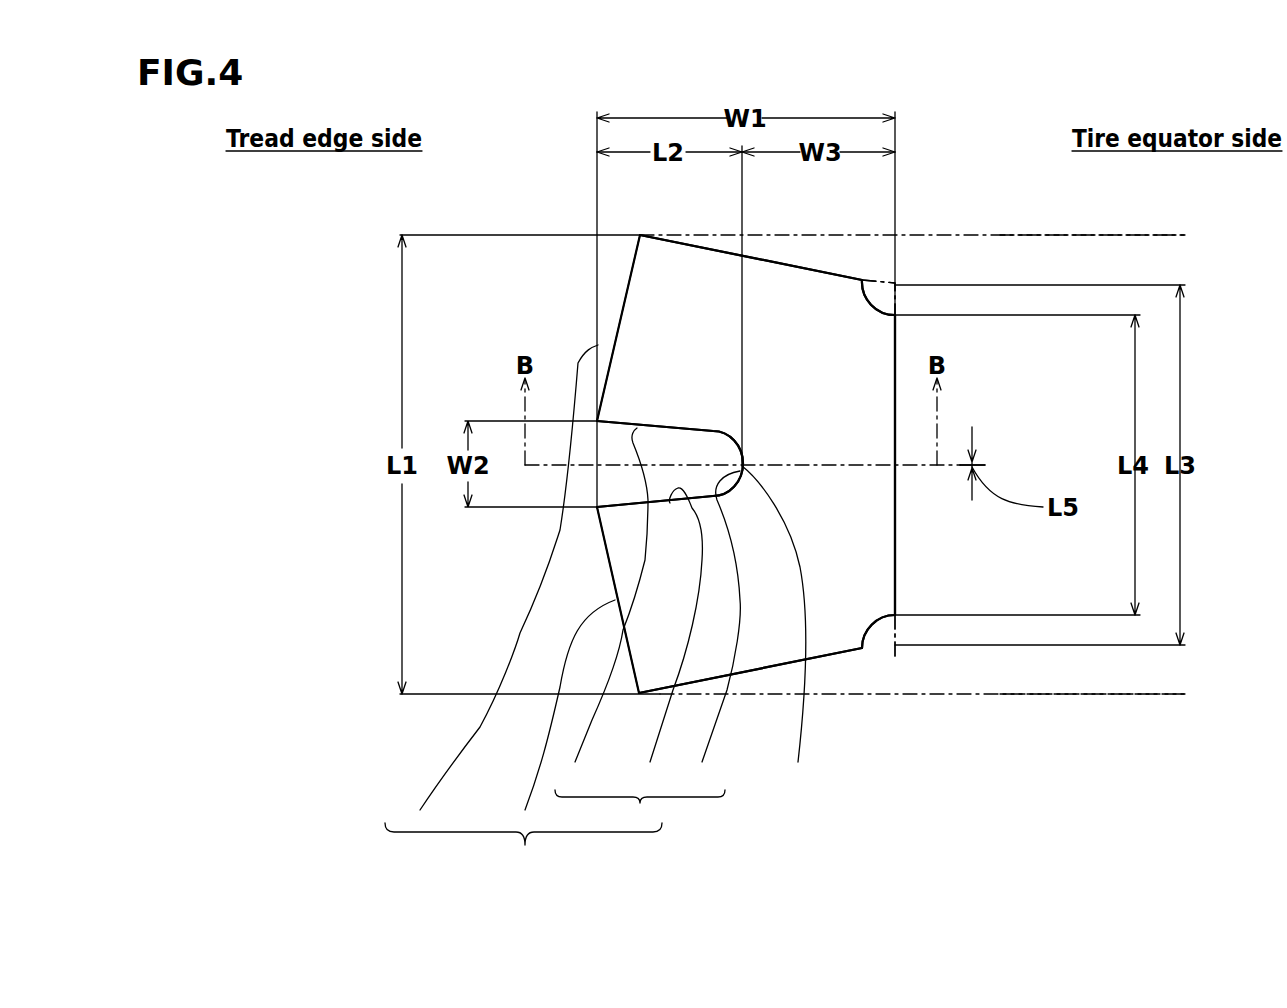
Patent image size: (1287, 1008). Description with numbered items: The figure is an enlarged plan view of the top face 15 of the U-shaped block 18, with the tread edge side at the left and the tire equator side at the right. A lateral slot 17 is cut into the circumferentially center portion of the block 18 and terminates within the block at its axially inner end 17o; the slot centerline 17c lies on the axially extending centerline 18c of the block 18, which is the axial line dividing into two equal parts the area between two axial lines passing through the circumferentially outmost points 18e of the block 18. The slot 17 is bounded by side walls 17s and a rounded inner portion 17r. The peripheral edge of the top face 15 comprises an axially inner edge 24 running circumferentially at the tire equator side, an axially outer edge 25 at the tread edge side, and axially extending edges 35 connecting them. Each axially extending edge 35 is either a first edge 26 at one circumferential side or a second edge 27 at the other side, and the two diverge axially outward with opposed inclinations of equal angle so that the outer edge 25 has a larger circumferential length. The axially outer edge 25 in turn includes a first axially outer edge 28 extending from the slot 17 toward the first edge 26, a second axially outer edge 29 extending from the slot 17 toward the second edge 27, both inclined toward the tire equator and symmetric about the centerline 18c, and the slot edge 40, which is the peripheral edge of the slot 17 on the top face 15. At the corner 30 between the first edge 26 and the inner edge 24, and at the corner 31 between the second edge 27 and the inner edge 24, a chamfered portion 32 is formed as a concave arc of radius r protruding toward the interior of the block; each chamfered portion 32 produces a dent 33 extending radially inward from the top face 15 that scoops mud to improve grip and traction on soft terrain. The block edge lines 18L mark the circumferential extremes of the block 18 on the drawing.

The U-shaped block 18 is at (564, 203).
The circumferentially outmost points 18e is at (640, 235).
The lateral slot 17 is at (679, 435).
The second edge 27 is at (752, 232).
The first edge 26 is at (828, 658).
The axially extending edge 35 is at (780, 262).
The chamfered portion 32 is at (968, 489).
The corner 31 is at (887, 283).
The corner 30 is at (874, 650).
The dent 33 is at (880, 303).
The block edge line 18L is at (1125, 235).
The axially extending centerline 18c is at (1032, 466).
The slot centerline 17c is at (1032, 466).
The axially inner edge 24 is at (895, 504).
The groove side wall 17s is at (629, 610).
The groove rounded portion 17r is at (709, 632).
The top face 15 is at (773, 608).
The axially inner end 17o is at (784, 629).
The second axially outer edge 29 is at (493, 591).
The first axially outer edge 28 is at (554, 718).
The slot edge 40 is at (640, 813).
The axially outer edge 25 is at (523, 853).
The radius of curvature r is at (879, 636).